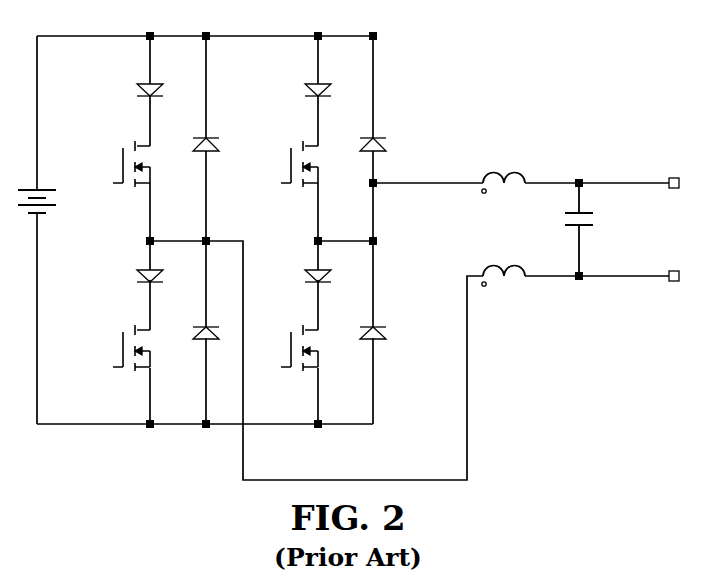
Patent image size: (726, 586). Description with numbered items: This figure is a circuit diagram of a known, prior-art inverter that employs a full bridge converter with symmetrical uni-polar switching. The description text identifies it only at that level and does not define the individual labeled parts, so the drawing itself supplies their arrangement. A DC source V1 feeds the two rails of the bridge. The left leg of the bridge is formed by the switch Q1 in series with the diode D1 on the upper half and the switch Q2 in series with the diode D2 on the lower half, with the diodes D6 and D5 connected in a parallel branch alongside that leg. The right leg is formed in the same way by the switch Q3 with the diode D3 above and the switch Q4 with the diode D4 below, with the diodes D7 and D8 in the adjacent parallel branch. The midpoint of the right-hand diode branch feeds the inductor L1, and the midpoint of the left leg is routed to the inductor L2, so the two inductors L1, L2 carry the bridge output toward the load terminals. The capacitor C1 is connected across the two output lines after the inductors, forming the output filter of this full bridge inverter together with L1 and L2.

The DC voltage source V1 is at (47, 190).
The diode D1 is at (161, 85).
The diode D2 is at (161, 271).
The diode D3 is at (329, 85).
The diode D4 is at (329, 271).
The diode D5 is at (193, 327).
The diode D6 is at (193, 140).
The diode D7 is at (360, 140).
The diode D8 is at (360, 327).
The MOSFET switch Q1 is at (131, 172).
The MOSFET switch Q2 is at (131, 357).
The MOSFET switch Q3 is at (299, 172).
The MOSFET switch Q4 is at (299, 357).
The inductor L1 is at (503, 193).
The inductor L2 is at (503, 286).
The capacitor C1 is at (590, 229).